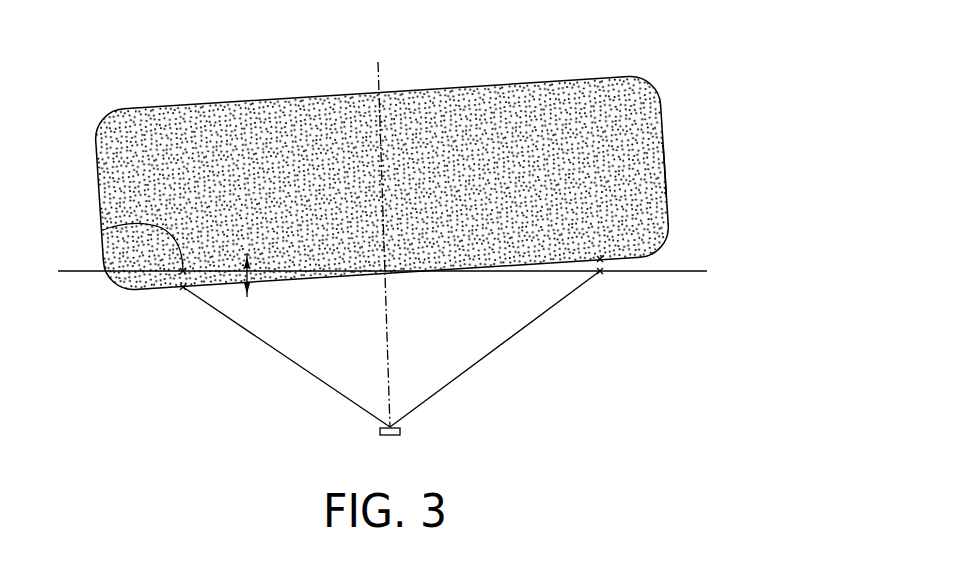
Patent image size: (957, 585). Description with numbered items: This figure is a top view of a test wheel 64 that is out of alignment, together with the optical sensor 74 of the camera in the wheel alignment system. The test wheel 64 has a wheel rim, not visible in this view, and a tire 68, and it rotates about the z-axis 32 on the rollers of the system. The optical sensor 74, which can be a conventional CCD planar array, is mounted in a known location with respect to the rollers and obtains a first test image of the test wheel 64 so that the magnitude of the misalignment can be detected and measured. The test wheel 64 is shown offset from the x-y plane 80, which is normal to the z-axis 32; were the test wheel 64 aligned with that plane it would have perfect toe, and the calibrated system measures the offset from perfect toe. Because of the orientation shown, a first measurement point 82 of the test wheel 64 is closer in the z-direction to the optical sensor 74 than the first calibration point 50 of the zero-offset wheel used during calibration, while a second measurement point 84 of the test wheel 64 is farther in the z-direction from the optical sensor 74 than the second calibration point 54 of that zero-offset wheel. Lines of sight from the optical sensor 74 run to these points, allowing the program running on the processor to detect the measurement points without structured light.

The test wheel 64 is at (620, 50).
The tire 68 is at (667, 194).
The z-axis 32 is at (382, 80).
The x-y plane 80 is at (98, 273).
The first calibration point 50 is at (103, 230).
The first measurement point 82 is at (183, 292).
The second calibration point 54 is at (600, 275).
The second measurement point 84 is at (612, 273).
The optical sensor 74 is at (390, 437).